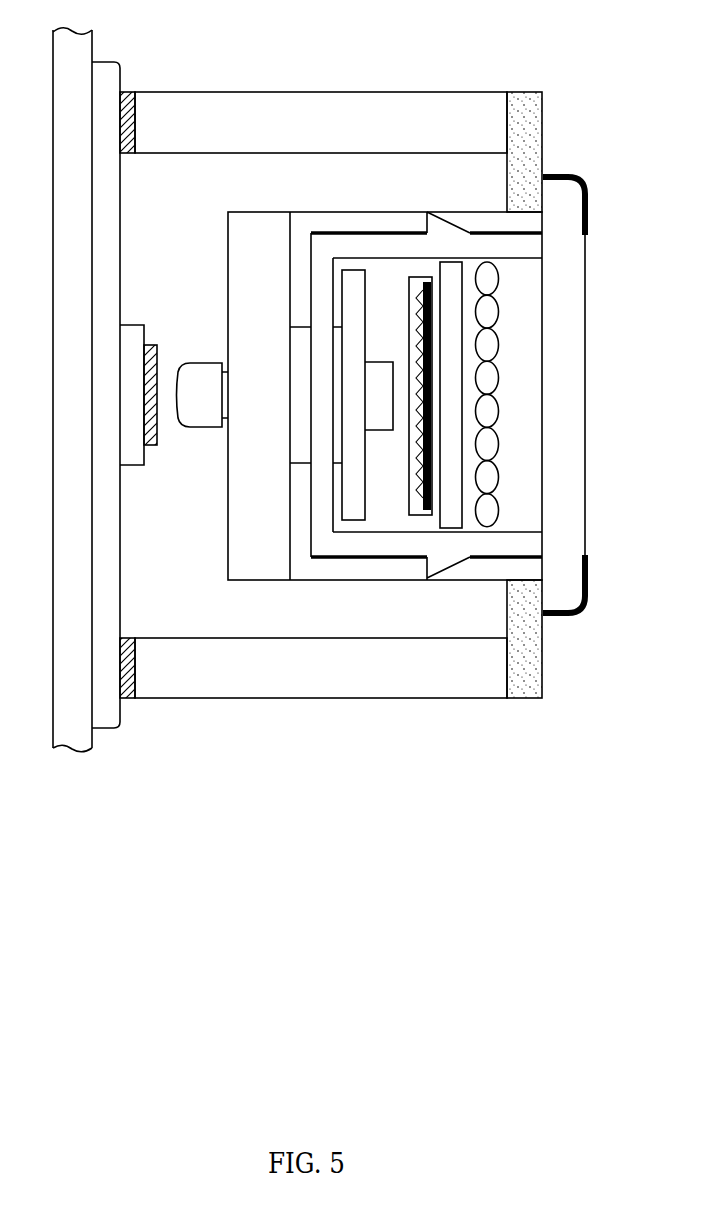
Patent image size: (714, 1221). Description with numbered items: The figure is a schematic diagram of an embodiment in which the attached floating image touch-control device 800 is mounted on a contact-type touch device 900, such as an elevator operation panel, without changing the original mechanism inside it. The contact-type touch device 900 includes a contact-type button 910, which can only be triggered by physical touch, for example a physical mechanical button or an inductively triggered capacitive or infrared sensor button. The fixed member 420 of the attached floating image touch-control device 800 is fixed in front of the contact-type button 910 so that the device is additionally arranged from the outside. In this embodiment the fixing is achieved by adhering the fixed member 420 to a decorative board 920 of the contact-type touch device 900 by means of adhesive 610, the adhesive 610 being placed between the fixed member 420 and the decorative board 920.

The fixed member 420 is at (318, 108).
The adhesive 610 is at (128, 92).
The attached floating image touch-control device 800 is at (425, 767).
The contact-type touch device 900 is at (88, 763).
The contact-type button 910 is at (150, 447).
The decorative board 920 is at (105, 715).